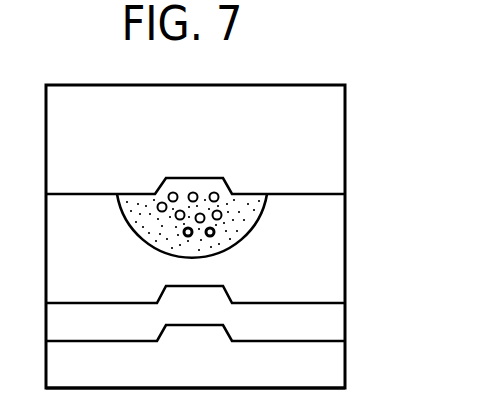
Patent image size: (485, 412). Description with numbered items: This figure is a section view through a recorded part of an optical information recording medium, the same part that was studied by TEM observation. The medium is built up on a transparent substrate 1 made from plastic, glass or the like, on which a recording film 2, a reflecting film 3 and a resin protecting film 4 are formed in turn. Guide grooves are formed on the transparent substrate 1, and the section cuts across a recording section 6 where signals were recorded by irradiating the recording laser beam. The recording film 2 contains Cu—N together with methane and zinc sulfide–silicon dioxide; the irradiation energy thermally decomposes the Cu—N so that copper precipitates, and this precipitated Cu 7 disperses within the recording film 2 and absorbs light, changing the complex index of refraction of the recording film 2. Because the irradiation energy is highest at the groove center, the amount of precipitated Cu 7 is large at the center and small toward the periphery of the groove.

The transparent substrate 1 is at (337, 142).
The recording film 2 is at (332, 224).
The reflecting film 3 is at (327, 325).
The resin protecting film 4 is at (322, 367).
The recording section 6 is at (243, 240).
The precipitated Cu 7 is at (217, 195).